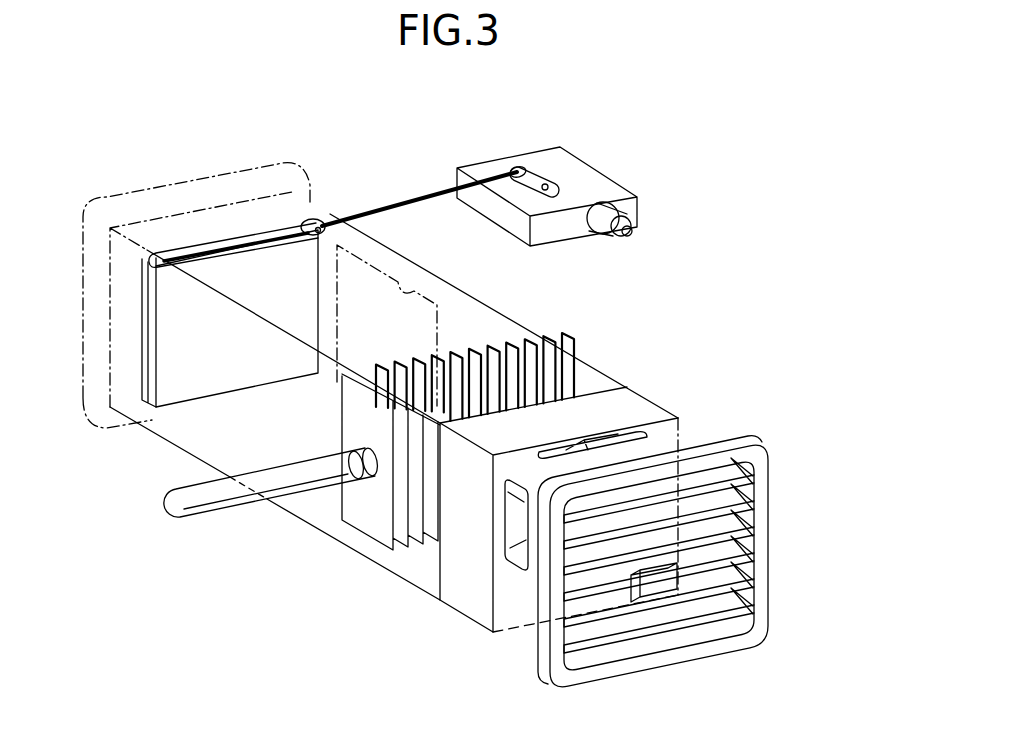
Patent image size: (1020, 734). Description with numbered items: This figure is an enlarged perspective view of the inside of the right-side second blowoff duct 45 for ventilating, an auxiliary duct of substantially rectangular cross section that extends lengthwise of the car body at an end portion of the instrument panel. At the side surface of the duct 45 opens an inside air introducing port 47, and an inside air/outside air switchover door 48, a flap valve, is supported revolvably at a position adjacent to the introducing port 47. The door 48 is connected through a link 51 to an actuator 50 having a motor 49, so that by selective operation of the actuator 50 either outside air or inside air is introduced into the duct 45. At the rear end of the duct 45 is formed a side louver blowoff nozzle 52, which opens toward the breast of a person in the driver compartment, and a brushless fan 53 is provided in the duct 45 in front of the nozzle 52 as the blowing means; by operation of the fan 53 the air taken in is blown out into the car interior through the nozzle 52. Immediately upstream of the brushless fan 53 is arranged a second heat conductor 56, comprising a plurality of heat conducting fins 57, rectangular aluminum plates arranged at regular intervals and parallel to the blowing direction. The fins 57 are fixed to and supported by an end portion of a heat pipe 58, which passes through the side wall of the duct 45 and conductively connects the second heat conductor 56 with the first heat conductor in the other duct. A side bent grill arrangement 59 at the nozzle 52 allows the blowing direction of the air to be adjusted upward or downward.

The second blowoff duct 45 is at (173, 447).
The inside air introducing port 47 is at (404, 287).
The inside air/outside air switchover door 48 is at (213, 242).
The motor 49 is at (610, 208).
The actuator 50 is at (577, 153).
The link 51 is at (407, 197).
The side louver blowoff nozzle 52 is at (757, 511).
The brushless fan 53 is at (637, 406).
The second heat conductor 56 is at (368, 538).
The heat conducting fins 57 is at (549, 352).
The heat pipe 58 is at (228, 508).
The side bent grill arrangement 59 is at (710, 578).